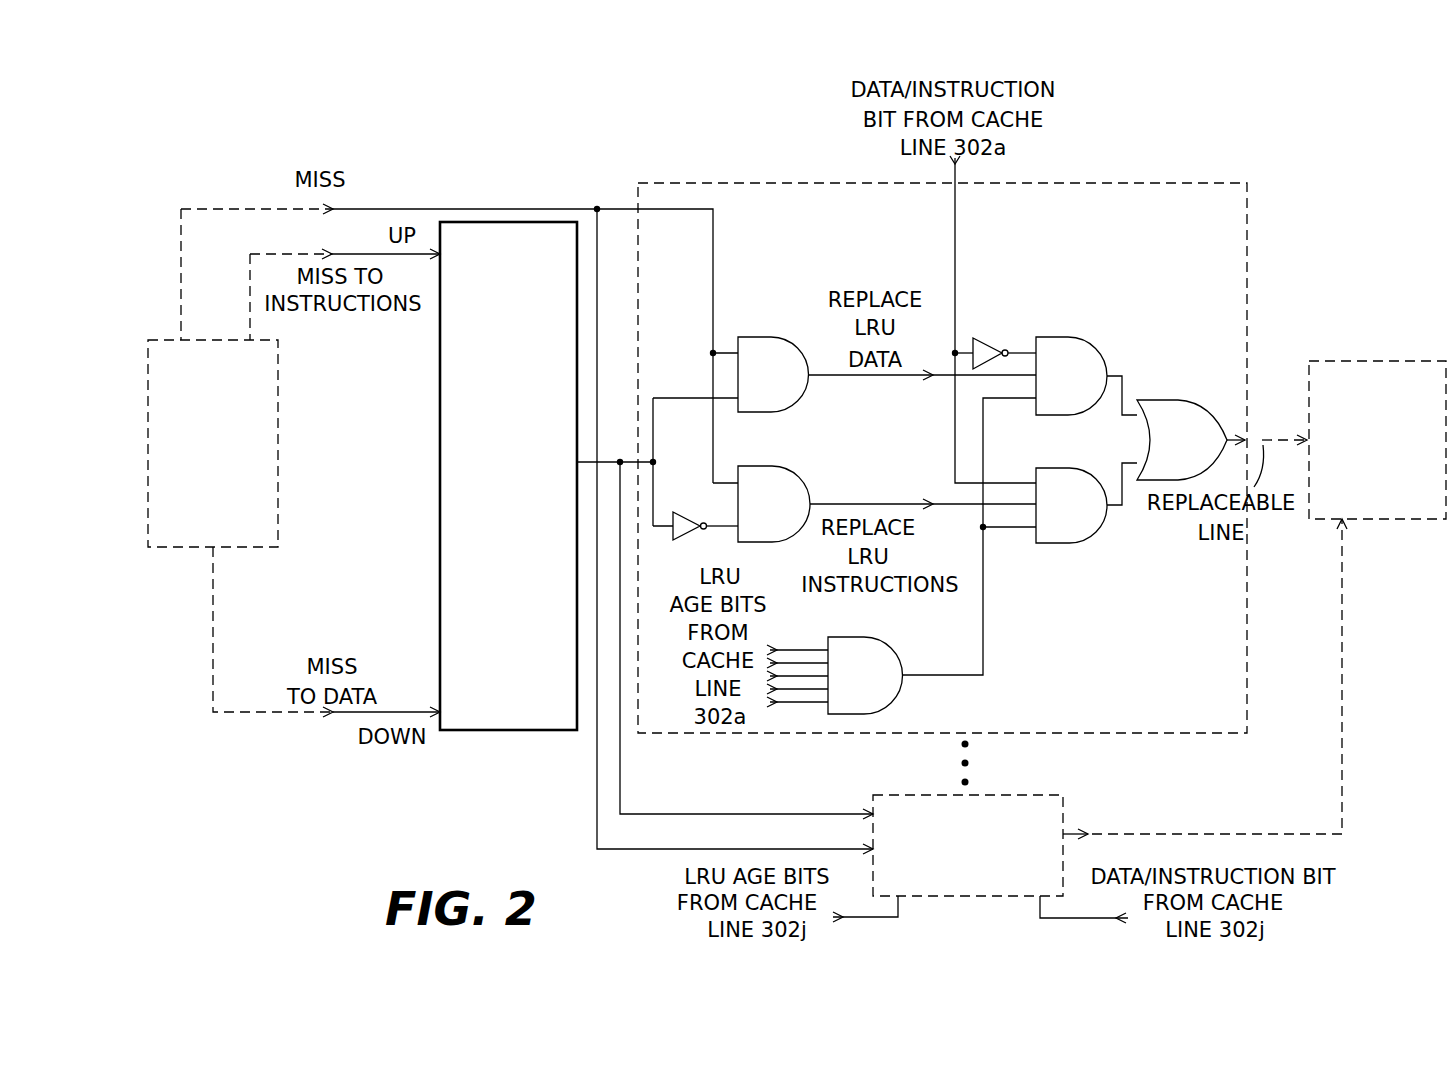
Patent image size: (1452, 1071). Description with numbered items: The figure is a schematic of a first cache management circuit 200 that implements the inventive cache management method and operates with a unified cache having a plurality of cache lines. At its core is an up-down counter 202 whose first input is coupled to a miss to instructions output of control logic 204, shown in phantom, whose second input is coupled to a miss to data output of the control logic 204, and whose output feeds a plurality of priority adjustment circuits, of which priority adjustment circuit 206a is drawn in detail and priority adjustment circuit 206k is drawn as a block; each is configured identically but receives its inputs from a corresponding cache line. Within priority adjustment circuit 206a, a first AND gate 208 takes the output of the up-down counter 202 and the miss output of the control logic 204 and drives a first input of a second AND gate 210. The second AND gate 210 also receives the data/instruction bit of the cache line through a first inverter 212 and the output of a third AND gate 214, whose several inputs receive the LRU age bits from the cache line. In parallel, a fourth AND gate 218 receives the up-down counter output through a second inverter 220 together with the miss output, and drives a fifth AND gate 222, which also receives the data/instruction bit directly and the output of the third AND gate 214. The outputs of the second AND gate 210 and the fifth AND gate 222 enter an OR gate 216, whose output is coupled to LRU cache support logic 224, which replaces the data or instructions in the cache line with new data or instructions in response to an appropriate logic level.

The first cache management circuit 200 is at (1324, 164).
The up-down counter 202 is at (568, 731).
The control logic 204 is at (258, 548).
The priority adjustment circuit 206a is at (1144, 183).
The priority adjustment circuit 206k is at (1047, 795).
The first AND gate 208 is at (773, 338).
The second AND gate 210 is at (1085, 342).
The first inverter 212 is at (995, 347).
The third AND gate 214 is at (892, 700).
The OR gate 216 is at (1152, 400).
The fourth AND gate 218 is at (783, 467).
The second inverter 220 is at (692, 513).
The fifth AND gate 222 is at (1053, 545).
The LRU cache support logic 224 is at (1394, 359).